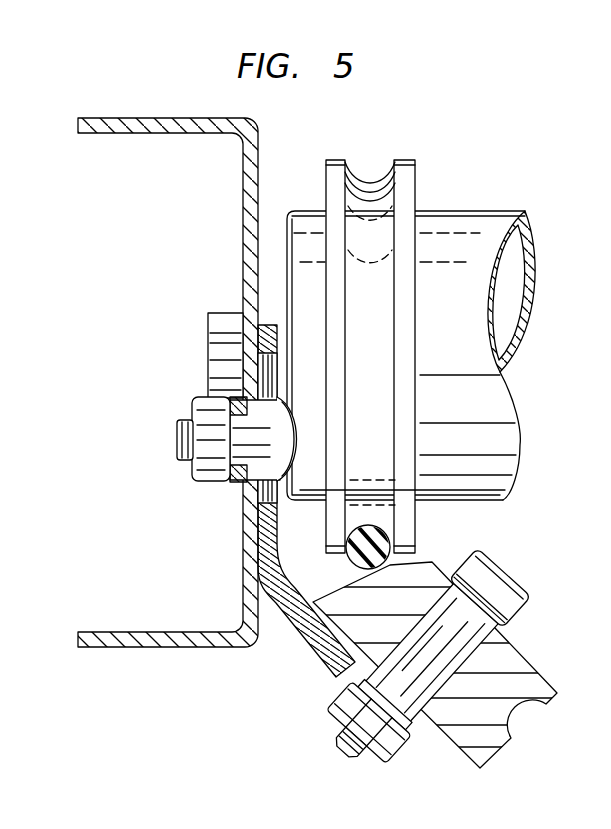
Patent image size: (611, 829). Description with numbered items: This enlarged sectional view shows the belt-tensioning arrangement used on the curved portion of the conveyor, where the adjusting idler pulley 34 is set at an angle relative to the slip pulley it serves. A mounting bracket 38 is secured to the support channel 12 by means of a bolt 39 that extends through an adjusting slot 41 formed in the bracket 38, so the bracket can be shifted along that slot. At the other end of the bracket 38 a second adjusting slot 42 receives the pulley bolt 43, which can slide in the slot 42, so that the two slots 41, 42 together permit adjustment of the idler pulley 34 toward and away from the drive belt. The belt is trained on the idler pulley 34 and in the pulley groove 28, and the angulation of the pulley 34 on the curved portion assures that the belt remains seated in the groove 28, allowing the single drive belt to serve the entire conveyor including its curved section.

The channel 12 is at (140, 118).
The groove 28 is at (372, 172).
The idler pulley 34 is at (512, 667).
The mounting bracket 38 is at (300, 637).
The bolt 39 is at (176, 458).
The adjusting slot 41 is at (263, 507).
The adjusting slot 42 is at (342, 668).
The pulley bolt 43 is at (498, 584).